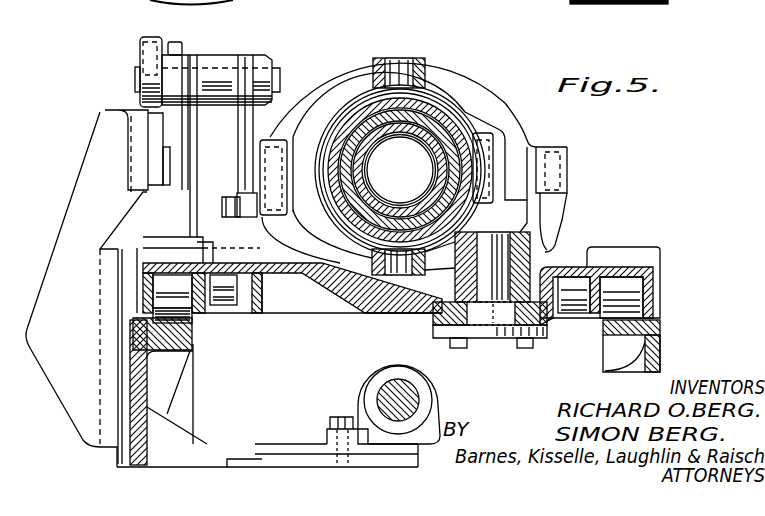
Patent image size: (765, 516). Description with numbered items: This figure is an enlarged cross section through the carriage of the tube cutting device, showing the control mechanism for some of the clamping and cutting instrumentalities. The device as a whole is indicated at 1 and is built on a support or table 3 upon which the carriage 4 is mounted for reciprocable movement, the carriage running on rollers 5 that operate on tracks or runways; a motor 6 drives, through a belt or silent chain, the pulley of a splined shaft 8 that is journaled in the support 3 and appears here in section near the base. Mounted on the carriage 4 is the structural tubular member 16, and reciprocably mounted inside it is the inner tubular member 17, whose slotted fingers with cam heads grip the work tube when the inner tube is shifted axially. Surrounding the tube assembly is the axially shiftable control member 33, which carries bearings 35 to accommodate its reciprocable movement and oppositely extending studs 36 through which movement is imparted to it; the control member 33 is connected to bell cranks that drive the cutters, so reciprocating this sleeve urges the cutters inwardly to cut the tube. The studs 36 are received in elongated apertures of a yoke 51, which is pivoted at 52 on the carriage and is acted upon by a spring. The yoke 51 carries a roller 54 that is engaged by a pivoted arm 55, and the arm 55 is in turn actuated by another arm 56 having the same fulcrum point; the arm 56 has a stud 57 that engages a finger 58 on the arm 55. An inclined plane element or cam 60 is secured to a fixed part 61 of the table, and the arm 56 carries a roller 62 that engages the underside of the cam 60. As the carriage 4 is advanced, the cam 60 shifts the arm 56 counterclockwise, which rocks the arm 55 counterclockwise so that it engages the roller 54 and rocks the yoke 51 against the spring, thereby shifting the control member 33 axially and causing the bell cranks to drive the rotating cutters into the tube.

The bearing assembly 1 is at (453, 132).
The support or table 3 is at (140, 388).
The carriage 4 is at (297, 305).
The rollers 5 is at (192, 318).
The motor 6 is at (282, 113).
The shaft 8 is at (395, 387).
The structural tubular member 16 is at (533, 118).
The tubular member 17 is at (428, 172).
The control member 33 is at (460, 148).
The bearings 35 is at (447, 171).
The studs 36 is at (400, 60).
The yoke 51 is at (455, 88).
The pivot 52 is at (547, 250).
The roller 54 is at (250, 232).
The pivoted arm 55 is at (245, 165).
The arm 56 is at (180, 125).
The stud 57 is at (175, 42).
The finger 58 is at (140, 45).
The inclined plane element or cam 60 is at (148, 126).
The fixed part 61 is at (78, 172).
The roller 62 is at (163, 153).